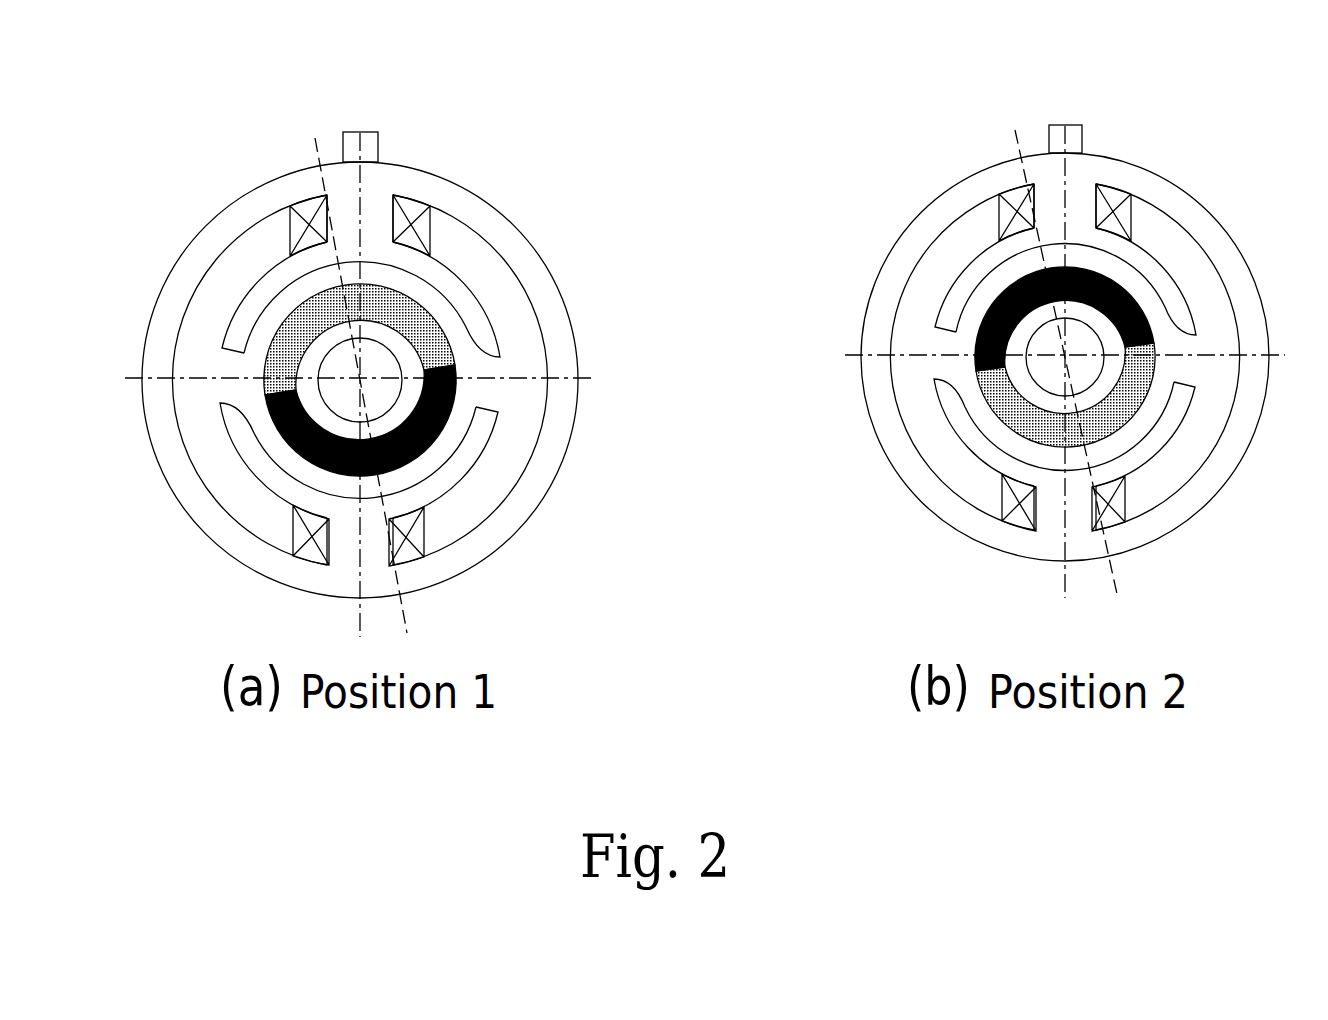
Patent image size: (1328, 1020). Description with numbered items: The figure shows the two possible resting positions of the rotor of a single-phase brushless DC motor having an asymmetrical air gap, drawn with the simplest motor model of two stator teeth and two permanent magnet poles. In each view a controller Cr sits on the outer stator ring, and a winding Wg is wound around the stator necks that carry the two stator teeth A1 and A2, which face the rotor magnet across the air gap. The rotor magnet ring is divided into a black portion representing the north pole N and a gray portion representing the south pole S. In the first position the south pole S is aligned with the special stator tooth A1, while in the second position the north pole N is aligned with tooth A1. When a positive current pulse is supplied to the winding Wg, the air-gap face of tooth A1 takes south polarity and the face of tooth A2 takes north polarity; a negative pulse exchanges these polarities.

The controller Cr is at (363, 146).
The winding Wg is at (413, 207).
The stator tooth A1 is at (477, 302).
The stator tooth A2 is at (460, 480).
The north pole N is at (458, 393).
The south pole S is at (262, 367).